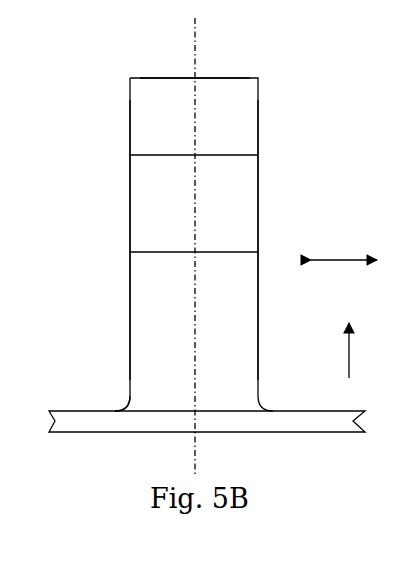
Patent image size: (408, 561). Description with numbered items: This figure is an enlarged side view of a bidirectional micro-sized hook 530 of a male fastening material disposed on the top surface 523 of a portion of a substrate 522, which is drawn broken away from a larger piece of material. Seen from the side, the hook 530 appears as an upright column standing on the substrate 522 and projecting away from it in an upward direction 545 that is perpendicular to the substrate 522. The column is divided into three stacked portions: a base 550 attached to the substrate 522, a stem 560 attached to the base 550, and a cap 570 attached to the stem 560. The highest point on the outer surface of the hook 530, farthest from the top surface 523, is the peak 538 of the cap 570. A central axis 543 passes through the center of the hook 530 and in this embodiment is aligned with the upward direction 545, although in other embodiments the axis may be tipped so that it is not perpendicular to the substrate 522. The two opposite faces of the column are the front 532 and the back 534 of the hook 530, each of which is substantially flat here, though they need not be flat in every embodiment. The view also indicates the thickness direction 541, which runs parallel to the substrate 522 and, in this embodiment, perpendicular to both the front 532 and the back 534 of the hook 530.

The hook 530 is at (126, 74).
The peak 538 is at (173, 75).
The central axis 543 is at (198, 41).
The cap 570 is at (174, 109).
The stem 560 is at (174, 191).
The base 550 is at (176, 291).
The front 532 is at (121, 176).
The back 534 is at (287, 180).
The thickness direction 541 is at (343, 260).
The upward direction 545 is at (350, 336).
The top surface 523 is at (92, 407).
The substrate 522 is at (187, 424).